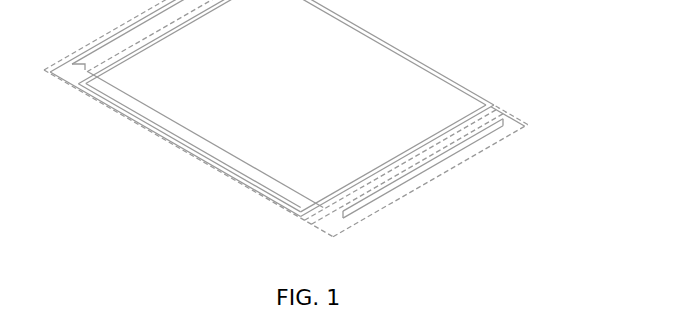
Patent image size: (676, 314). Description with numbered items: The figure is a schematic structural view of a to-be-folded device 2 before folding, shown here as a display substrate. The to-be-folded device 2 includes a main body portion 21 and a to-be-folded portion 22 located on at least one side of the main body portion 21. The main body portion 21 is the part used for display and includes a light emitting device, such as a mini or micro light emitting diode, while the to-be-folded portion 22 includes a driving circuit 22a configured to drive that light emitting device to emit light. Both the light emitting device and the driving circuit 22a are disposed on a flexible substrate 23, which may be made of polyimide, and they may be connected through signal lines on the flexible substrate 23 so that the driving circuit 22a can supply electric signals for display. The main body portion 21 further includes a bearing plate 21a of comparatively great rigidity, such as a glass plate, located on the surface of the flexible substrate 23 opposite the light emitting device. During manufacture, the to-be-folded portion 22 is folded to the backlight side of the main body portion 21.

The to-be-folded device 2 is at (188, 217).
The main body portion 21 is at (300, 213).
The bearing plate 21a is at (453, 97).
The to-be-folded portion 22 is at (330, 237).
The driving circuit 22a is at (485, 146).
The flexible substrate 23 is at (500, 118).